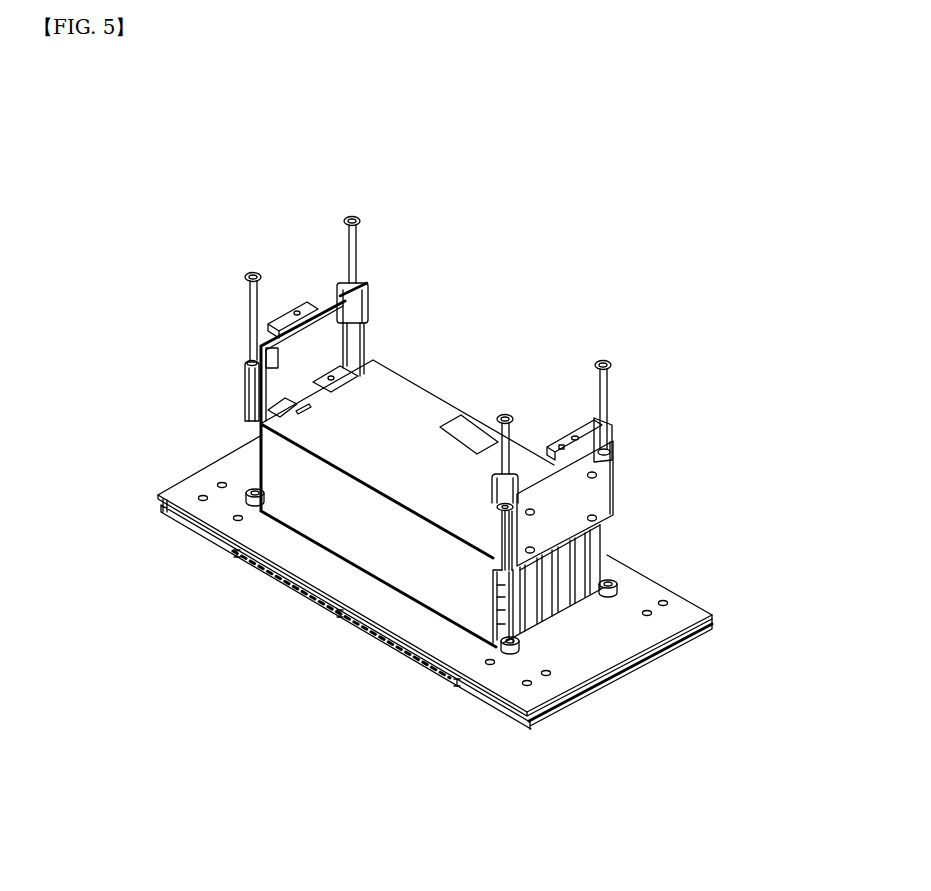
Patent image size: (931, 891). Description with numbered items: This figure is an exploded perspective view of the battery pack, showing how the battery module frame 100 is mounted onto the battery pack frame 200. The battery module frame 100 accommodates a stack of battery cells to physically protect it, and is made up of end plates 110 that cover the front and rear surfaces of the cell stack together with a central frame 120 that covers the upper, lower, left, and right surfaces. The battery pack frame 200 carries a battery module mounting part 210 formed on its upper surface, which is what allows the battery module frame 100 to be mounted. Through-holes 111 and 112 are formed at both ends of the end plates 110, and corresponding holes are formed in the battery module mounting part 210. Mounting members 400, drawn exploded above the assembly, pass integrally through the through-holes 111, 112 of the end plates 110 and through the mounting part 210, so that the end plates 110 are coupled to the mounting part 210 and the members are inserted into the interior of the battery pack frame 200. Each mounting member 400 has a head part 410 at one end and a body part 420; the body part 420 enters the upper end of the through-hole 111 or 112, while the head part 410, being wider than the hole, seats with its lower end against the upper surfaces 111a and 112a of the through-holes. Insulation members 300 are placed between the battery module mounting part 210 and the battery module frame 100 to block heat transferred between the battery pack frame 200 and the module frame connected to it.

The battery module frame 100 is at (407, 474).
The end plate 110 is at (381, 358).
The through-hole 111 is at (418, 622).
The upper surface of the through-hole 111a is at (414, 606).
The through-hole 112 is at (624, 492).
The upper surface of the through-hole 112a is at (662, 440).
The central frame 120 is at (408, 385).
The battery pack frame 200 is at (431, 599).
The battery module mounting part 210 is at (431, 631).
The insulation member 300 is at (418, 610).
The mounting member 400 is at (435, 288).
The head part 410 is at (435, 281).
The body part 420 is at (435, 306).